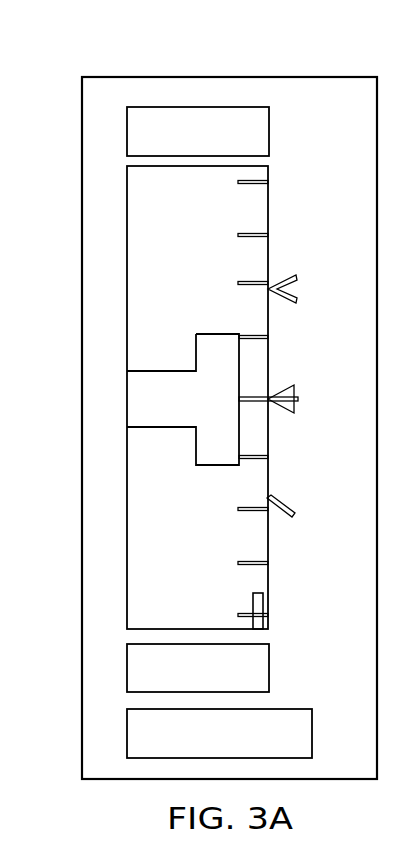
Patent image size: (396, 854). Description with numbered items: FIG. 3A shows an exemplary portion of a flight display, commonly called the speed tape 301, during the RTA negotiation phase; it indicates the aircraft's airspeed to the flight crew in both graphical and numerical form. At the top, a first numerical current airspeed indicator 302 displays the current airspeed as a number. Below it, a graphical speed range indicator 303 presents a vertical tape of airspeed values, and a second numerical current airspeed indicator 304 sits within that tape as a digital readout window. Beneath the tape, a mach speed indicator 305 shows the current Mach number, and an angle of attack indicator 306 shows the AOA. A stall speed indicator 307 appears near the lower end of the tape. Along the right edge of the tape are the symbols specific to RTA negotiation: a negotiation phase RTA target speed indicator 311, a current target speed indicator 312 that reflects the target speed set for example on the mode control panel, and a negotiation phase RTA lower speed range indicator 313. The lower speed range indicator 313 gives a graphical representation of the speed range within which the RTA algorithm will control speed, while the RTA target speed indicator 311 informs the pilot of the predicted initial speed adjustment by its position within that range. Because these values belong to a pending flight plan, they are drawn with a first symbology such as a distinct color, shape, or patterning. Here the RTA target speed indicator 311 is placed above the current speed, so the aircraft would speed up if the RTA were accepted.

The speed tape 301 is at (81, 70).
The first numerical current airspeed indicator 302 is at (263, 133).
The graphical speed range indicator 303 is at (122, 629).
The second numerical current airspeed indicator 304 is at (217, 334).
The mach speed indicator 305 is at (262, 657).
The angle of attack indicator 306 is at (298, 718).
The stall speed indicator 307 is at (263, 602).
The negotiation phase RTA target speed indicator 311 is at (290, 275).
The current target speed indicator 312 is at (296, 388).
The negotiation phase RTA lower speed range indicator 313 is at (283, 503).